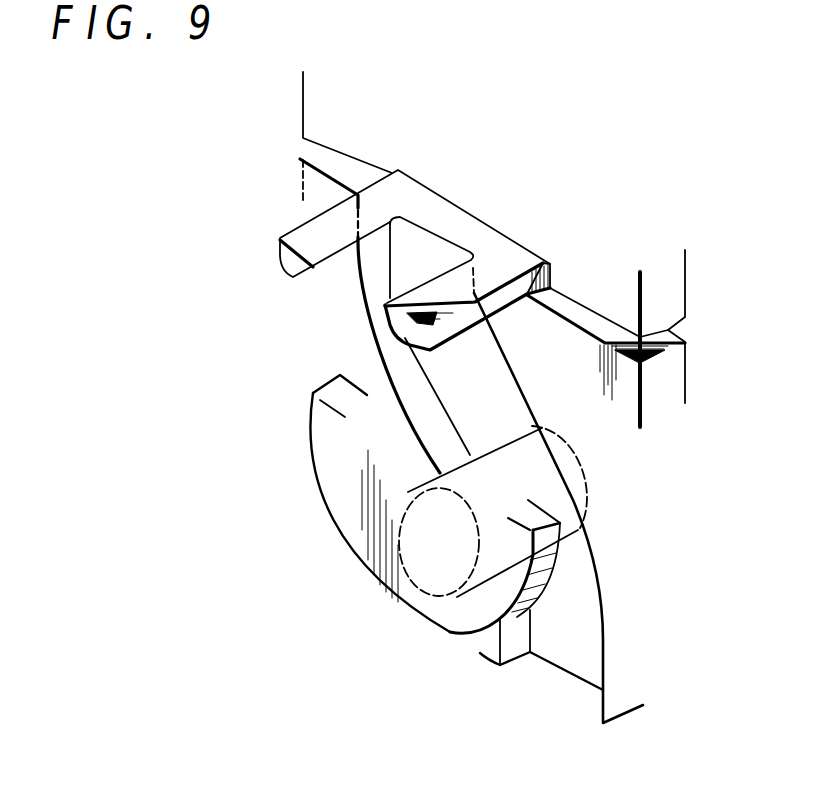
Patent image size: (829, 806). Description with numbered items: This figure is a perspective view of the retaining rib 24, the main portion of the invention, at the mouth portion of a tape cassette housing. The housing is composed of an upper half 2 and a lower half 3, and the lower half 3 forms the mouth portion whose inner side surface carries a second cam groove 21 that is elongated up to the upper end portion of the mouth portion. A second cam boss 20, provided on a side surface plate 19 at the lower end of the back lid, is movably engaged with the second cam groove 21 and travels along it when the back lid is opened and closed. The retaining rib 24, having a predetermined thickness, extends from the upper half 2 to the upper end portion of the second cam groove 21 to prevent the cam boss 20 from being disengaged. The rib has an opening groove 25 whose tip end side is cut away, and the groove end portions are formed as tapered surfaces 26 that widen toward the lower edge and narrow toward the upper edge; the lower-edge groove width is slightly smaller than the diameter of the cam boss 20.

The upper half 2 is at (612, 287).
The lower half 3 is at (625, 383).
The side surface plate 19 is at (327, 487).
The second cam boss 20 is at (502, 447).
The second cam groove 21 is at (573, 637).
The retaining rib 24 is at (300, 223).
The opening groove 25 is at (336, 256).
The tapered surface 26 is at (310, 277).